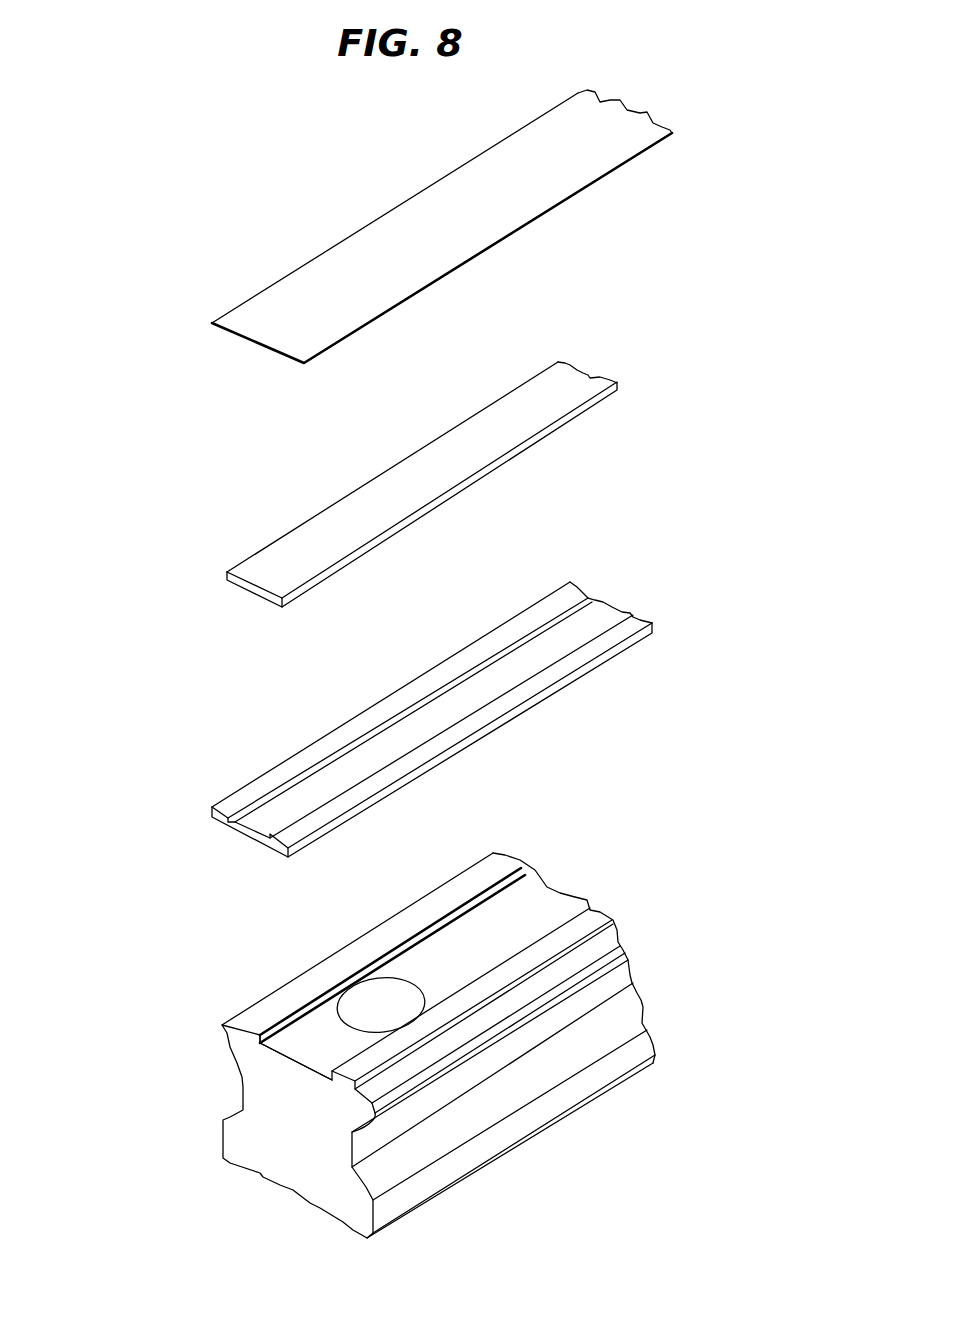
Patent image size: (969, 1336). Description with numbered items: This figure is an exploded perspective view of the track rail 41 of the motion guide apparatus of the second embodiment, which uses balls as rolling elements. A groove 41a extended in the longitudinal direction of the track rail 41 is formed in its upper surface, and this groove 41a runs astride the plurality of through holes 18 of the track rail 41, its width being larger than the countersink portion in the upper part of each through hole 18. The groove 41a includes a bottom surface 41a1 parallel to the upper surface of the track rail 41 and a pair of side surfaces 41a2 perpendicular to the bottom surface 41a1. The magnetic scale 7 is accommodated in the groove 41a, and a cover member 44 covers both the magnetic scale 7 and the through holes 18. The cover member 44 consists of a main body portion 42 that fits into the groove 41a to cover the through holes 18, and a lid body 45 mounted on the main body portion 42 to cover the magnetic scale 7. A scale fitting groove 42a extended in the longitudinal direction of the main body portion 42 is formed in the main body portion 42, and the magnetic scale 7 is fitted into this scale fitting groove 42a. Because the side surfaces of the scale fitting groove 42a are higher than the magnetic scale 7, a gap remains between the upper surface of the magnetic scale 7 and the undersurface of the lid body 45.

The cover member 44 is at (125, 268).
The lid body 45 is at (255, 312).
The magnetic scale 7 is at (447, 455).
The main body portion 42 is at (295, 762).
The scale fitting groove 42a is at (472, 693).
The track rail 41 is at (563, 1017).
The groove 41a is at (287, 922).
The bottom surface 41a1 is at (292, 1037).
The side surfaces 41a2 is at (272, 1027).
The through holes 18 is at (368, 1000).